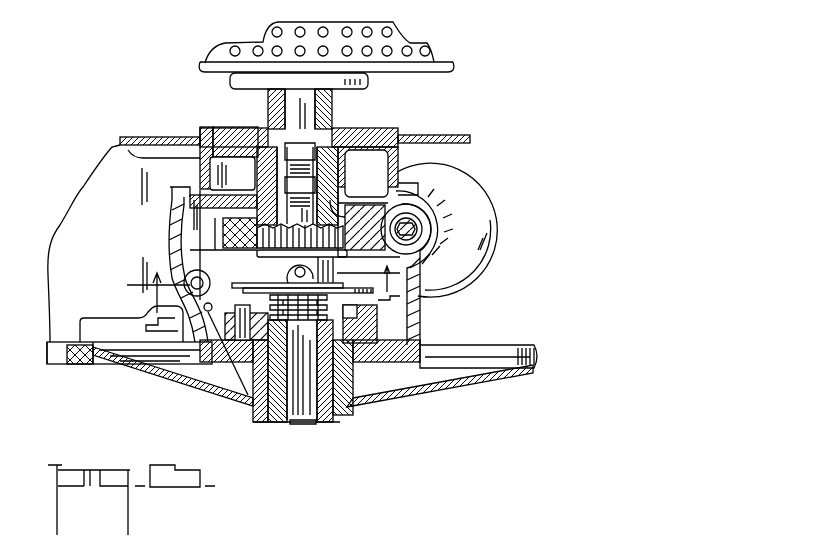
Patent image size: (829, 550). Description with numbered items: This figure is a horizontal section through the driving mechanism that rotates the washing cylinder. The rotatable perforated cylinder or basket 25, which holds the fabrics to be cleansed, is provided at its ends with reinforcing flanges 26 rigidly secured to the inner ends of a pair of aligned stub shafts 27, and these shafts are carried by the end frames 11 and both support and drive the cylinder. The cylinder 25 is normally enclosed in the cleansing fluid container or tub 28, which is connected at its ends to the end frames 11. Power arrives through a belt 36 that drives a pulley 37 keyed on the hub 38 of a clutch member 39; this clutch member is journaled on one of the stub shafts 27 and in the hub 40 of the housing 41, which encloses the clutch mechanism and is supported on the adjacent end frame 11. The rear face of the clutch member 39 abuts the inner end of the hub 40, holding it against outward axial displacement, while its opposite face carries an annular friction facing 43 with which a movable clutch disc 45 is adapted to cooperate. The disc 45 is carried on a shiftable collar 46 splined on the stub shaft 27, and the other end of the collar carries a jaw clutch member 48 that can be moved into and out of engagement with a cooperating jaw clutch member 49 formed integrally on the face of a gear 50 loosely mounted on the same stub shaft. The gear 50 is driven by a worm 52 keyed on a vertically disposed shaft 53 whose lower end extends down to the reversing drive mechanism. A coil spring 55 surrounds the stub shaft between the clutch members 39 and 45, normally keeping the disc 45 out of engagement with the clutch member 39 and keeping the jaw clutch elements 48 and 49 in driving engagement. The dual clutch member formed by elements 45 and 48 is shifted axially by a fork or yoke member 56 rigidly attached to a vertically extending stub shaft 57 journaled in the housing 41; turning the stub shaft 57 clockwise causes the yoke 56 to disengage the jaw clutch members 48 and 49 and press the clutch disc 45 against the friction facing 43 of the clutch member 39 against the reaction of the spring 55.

The perforated cylinder or basket 25 is at (395, 48).
The reinforcing flanges 26 is at (232, 80).
The stub shafts 27 is at (290, 117).
The cleansing fluid container or tub 28 is at (450, 135).
The end frames 11 is at (470, 140).
The gear 50 is at (355, 225).
The vertically disposed shaft 53 is at (410, 220).
The worm 52 is at (420, 237).
The housing 41 is at (458, 272).
The annular friction facing 43 is at (420, 305).
The clutch member 39 is at (430, 338).
The hub 40 is at (355, 380).
The hub 38 is at (275, 422).
The coil spring 55 is at (303, 422).
The movable clutch disc 45 is at (218, 378).
The fork or yoke member 56 is at (172, 385).
The belt 36 is at (73, 366).
The pulley 37 is at (190, 386).
The jaw clutch member 49 is at (192, 255).
The jaw clutch member 48 is at (192, 280).
The vertically extending stub shaft 57 is at (150, 285).
The shiftable collar 46 is at (313, 276).